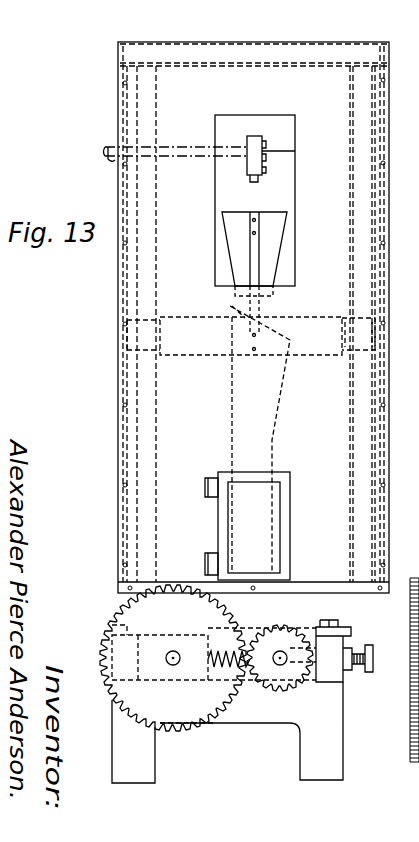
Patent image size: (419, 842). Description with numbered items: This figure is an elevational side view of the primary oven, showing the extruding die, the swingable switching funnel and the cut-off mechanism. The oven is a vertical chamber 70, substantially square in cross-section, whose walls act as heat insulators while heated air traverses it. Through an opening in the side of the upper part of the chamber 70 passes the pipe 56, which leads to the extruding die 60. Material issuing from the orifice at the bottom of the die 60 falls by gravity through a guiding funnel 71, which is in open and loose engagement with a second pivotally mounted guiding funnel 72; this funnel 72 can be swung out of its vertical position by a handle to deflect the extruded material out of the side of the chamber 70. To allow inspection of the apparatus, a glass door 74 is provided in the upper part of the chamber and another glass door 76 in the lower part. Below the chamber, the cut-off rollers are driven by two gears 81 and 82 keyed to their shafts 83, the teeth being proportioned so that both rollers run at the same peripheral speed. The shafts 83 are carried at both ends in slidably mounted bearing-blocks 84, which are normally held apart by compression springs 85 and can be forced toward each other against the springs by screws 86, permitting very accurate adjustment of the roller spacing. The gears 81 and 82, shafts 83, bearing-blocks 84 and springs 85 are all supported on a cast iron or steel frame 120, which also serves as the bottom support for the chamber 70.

The pipe 56 is at (108, 157).
The extruding die 60 is at (258, 161).
The chamber 70 is at (392, 341).
The guiding funnel 71 is at (268, 259).
The second pivotally mounted guiding funnel 72 is at (274, 408).
The glass door 74 is at (283, 203).
The glass door 76 is at (262, 538).
The gear 81 is at (112, 613).
The gear 82 is at (404, 668).
The shaft 83 is at (284, 650).
The bearing-block 84 is at (186, 675).
The compression spring 85 is at (243, 638).
The screw 86 is at (370, 668).
The frame 120 is at (337, 765).